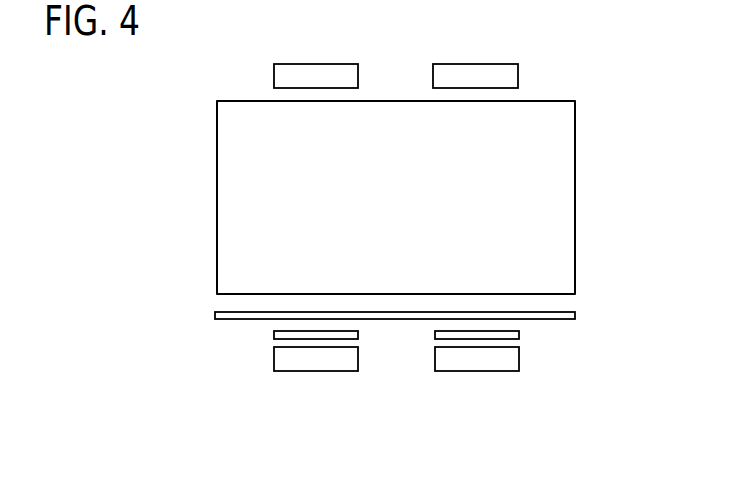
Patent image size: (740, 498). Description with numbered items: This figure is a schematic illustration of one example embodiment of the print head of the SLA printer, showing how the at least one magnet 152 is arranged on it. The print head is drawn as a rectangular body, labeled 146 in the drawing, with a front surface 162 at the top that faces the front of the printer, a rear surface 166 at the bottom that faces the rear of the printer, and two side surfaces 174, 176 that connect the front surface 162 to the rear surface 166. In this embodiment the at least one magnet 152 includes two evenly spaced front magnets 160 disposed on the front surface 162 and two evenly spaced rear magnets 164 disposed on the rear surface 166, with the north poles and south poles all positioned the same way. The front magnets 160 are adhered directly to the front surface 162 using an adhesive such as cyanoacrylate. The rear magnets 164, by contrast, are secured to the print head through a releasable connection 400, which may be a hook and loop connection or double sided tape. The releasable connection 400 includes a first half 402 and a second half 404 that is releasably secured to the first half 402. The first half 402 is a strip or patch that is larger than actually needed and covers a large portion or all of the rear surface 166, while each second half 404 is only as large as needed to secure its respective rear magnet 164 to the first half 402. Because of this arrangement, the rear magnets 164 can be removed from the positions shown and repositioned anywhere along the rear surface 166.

The body / core 146 is at (412, 214).
The at least one magnet 152 is at (383, 230).
The front magnet 160 is at (274, 74).
The front surface 162 is at (542, 101).
The rear magnet 164 is at (283, 372).
The rear surface 166 is at (547, 294).
The side surface 174 is at (217, 197).
The side surface 176 is at (575, 198).
The releasable connection 400 is at (403, 332).
The first half 402 is at (273, 335).
The second half 404 is at (237, 320).